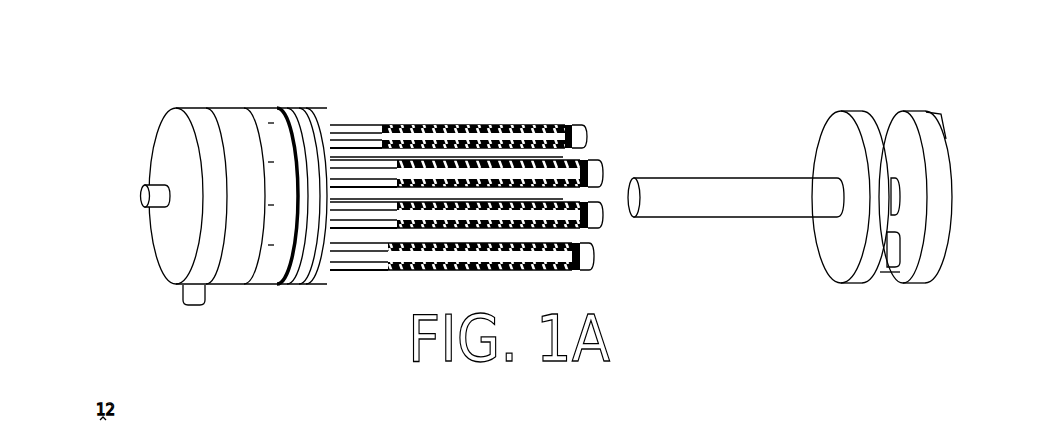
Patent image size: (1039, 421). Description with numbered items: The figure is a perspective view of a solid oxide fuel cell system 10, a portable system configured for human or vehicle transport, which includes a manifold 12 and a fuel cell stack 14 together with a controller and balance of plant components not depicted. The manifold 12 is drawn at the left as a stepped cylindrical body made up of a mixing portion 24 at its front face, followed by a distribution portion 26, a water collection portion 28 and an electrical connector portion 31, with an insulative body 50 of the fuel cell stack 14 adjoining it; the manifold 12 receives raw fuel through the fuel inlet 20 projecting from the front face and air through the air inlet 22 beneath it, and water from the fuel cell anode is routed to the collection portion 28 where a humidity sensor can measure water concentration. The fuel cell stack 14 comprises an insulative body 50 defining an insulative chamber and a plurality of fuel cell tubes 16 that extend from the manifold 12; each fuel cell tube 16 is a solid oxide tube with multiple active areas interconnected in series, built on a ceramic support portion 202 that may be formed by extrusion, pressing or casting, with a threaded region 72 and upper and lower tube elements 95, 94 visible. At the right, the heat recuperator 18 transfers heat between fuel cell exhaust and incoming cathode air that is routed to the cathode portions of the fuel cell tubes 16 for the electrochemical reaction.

The solid oxide fuel cell system 10 is at (140, 107).
The manifold 12 is at (298, 104).
The fuel cell stack 14 is at (597, 131).
The fuel cell tube 16 is at (597, 257).
The heat recuperator 18 is at (811, 258).
The fuel inlet 20 is at (146, 197).
The air inlet 22 is at (196, 298).
The mixing portion 24 is at (165, 173).
The distribution portion 26 is at (229, 260).
The water collection portion 28 is at (263, 268).
The electrical connector portion 31 is at (298, 268).
The insulative body 50 is at (313, 268).
The threaded portion 72 is at (380, 122).
The lower rod 94 is at (380, 266).
The upper rod 95 is at (345, 127).
The support portion 202 is at (567, 125).